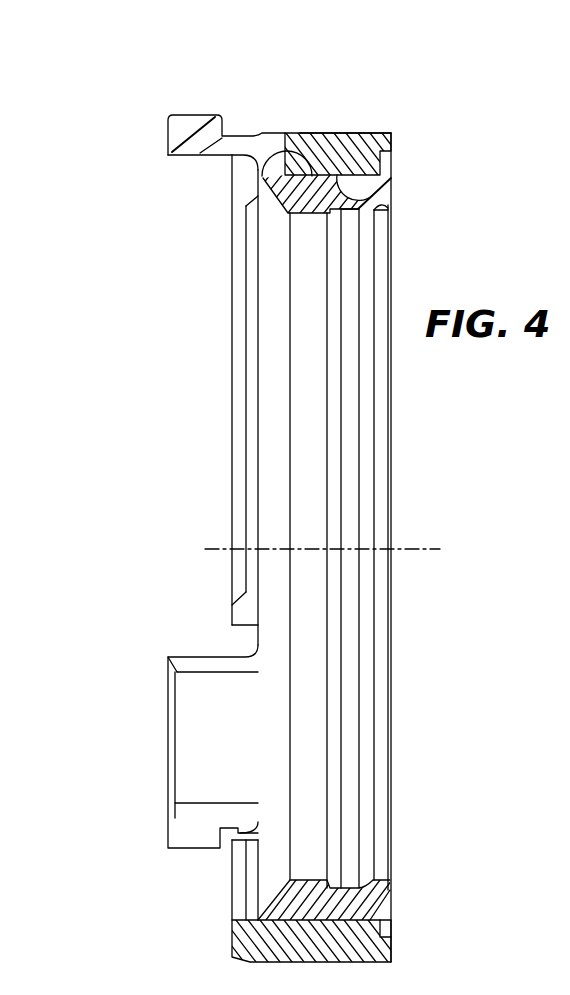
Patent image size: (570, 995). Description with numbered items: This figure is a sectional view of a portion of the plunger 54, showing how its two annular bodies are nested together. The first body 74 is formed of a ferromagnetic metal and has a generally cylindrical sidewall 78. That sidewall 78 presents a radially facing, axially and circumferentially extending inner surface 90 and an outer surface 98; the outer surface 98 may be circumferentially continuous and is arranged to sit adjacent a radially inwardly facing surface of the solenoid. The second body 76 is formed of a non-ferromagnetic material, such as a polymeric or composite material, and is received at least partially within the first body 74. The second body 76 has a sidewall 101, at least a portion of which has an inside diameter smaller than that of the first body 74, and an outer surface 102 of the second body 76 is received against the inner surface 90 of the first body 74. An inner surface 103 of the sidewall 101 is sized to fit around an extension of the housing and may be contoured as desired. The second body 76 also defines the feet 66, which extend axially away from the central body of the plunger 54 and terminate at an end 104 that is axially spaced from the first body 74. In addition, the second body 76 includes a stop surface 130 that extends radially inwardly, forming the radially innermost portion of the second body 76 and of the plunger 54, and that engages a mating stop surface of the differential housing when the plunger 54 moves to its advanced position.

The plunger 54 is at (421, 109).
The feet 66 is at (199, 125).
The first body 74 is at (352, 127).
The second body 76 is at (388, 192).
The sidewall 78 is at (332, 147).
The inner surface 90 is at (393, 180).
The outer surface 98 is at (298, 132).
The sidewall 101 is at (378, 206).
The outer surface 102 is at (261, 165).
The inner surface 103 is at (352, 456).
The end 104 is at (168, 120).
The stop surface 130 is at (386, 832).